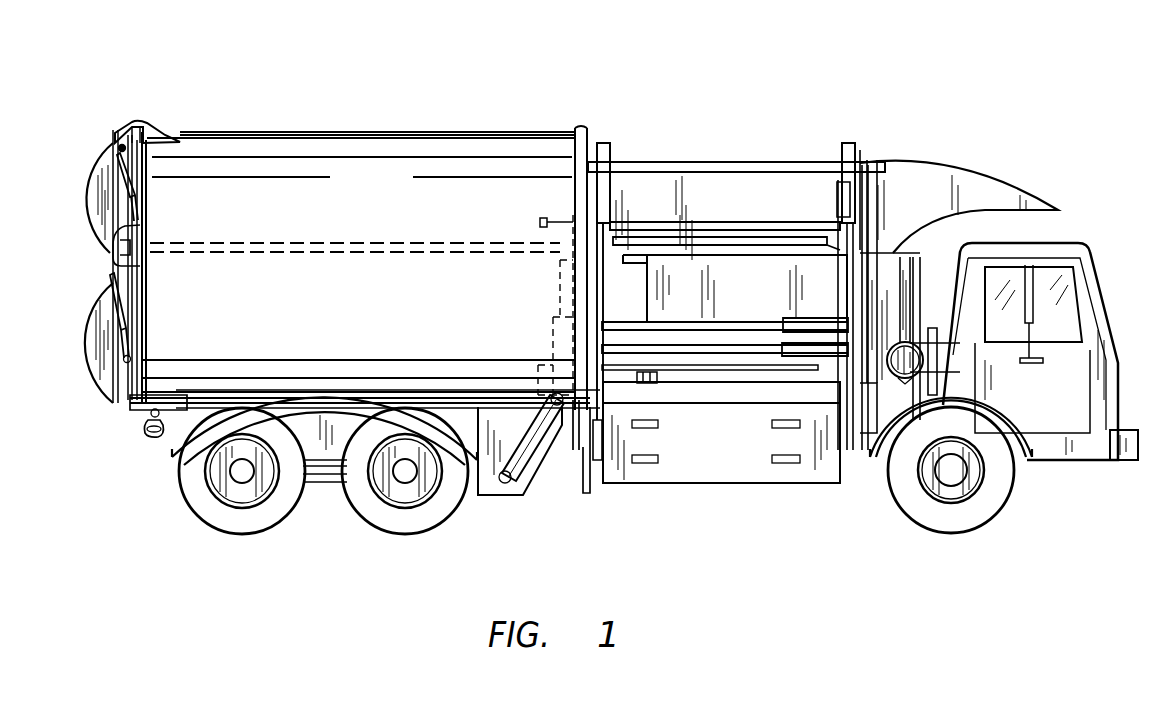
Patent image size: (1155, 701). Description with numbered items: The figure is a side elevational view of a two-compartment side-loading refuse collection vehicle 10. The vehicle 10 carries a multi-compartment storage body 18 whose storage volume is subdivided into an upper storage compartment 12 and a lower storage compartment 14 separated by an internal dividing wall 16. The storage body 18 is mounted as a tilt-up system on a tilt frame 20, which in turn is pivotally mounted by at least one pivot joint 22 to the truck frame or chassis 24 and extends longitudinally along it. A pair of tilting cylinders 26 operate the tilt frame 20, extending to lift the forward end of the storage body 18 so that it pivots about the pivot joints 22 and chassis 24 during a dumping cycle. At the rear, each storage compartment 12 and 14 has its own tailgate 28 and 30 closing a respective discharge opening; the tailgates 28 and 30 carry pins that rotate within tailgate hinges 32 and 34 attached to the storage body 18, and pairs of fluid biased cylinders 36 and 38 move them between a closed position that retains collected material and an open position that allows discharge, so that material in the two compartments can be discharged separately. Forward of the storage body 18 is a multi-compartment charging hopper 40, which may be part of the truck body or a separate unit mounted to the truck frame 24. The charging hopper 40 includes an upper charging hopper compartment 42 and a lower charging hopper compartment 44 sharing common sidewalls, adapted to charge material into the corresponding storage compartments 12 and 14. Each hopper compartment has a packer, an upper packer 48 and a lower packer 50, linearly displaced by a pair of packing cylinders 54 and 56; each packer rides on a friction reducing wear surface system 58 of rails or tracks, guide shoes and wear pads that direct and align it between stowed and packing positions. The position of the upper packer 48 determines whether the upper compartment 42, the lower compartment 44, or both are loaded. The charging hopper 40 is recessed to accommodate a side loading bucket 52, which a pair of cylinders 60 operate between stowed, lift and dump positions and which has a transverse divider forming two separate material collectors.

The collection vehicle 10 is at (664, 64).
The upper storage compartment 12 is at (337, 150).
The lower storage compartment 14 is at (266, 321).
The internal dividing wall 16 is at (200, 247).
The storage body 18 is at (462, 124).
The tilt frame 20 is at (520, 400).
The pivot joint 22 is at (143, 428).
The truck frame or chassis 24 is at (570, 443).
The tilting cylinder 26 is at (537, 437).
The tailgate 28 is at (95, 174).
The tailgate 30 is at (88, 353).
The tailgate hinge 32 is at (143, 122).
The tailgate hinge 34 is at (120, 244).
The fluid biased cylinder 36 is at (130, 192).
The fluid biased cylinder 38 is at (121, 320).
The charging hopper 40 is at (764, 150).
The upper charging hopper compartment 42 is at (665, 178).
The lower charging hopper compartment 44 is at (595, 262).
The upper packer 48 is at (578, 192).
The packer 50 is at (612, 302).
The side loading bucket 52 is at (728, 480).
The packing cylinder 54 is at (810, 218).
The packing cylinder 56 is at (793, 353).
The friction reducing wear surface system 58 is at (517, 240).
The cylinder 60 is at (867, 180).